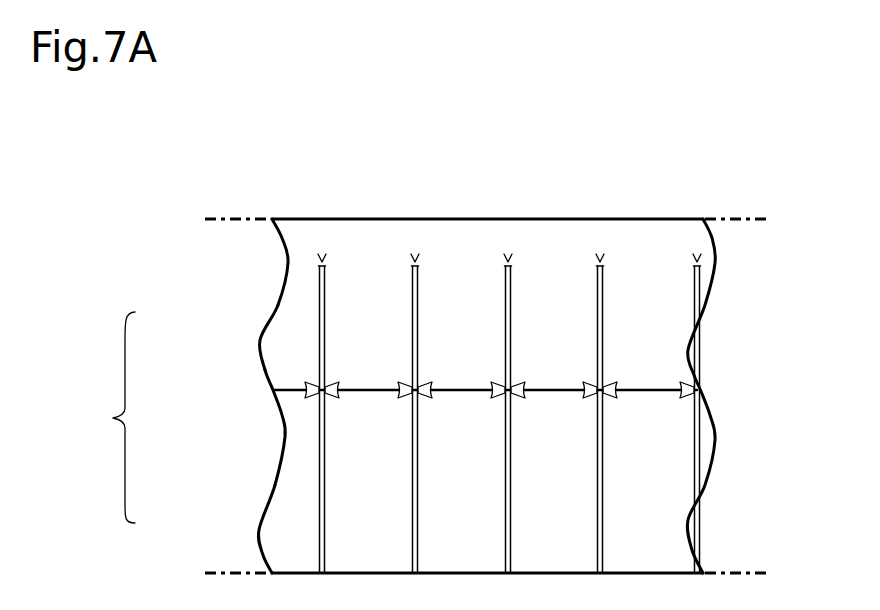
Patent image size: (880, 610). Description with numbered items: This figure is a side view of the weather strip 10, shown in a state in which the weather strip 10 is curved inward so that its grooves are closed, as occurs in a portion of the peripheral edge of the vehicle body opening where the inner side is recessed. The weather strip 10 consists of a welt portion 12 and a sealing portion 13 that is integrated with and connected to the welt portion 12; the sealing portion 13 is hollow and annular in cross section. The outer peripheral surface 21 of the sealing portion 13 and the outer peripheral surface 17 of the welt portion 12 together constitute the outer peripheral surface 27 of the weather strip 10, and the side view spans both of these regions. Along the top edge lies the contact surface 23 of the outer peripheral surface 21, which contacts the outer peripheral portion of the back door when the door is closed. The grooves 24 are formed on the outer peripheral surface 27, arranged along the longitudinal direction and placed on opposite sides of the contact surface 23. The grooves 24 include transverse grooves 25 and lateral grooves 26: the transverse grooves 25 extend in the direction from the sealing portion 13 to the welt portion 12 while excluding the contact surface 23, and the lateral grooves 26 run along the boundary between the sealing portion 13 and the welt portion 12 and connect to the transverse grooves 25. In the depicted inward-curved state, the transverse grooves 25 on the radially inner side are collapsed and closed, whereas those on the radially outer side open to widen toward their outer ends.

The weather strip 10 is at (424, 347).
The welt portion 12 is at (285, 437).
The sealing portion 13 is at (286, 276).
The outer peripheral surface 17 is at (295, 528).
The outer peripheral surface 21 is at (297, 340).
The contact surface 23 is at (396, 219).
The grooves 24 is at (322, 258).
The transverse grooves 25 is at (325, 323).
The lateral grooves 26 is at (340, 389).
The outer peripheral surface 27 is at (189, 439).